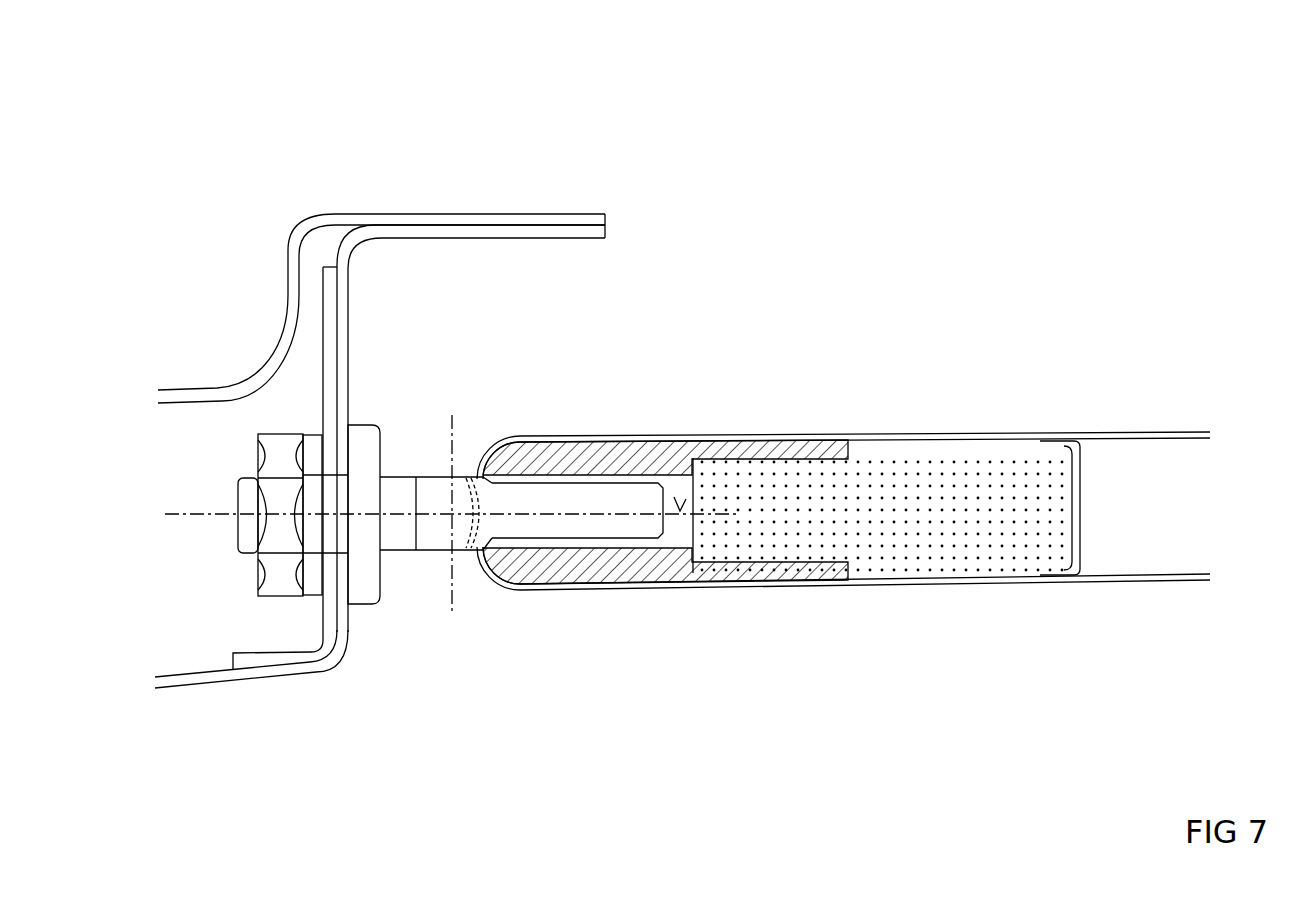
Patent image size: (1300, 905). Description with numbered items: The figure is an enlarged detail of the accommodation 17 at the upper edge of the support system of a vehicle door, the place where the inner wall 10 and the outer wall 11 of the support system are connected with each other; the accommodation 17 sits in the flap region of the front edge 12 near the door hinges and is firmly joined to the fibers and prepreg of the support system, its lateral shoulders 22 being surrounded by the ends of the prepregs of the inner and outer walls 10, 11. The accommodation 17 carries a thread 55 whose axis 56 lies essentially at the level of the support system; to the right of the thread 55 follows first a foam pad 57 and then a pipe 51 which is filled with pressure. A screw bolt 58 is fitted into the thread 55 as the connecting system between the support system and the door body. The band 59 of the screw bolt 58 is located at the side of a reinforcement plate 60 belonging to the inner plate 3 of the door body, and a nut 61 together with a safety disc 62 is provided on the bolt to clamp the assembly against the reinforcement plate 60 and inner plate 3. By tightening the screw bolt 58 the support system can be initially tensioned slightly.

The inner plate 3 is at (290, 275).
The reinforcement plate 60 is at (330, 337).
The front edge 12 is at (505, 412).
The accommodation 17 is at (573, 458).
The thread 55 is at (643, 478).
The axis 56 is at (681, 508).
The inner wall 10 is at (907, 437).
The pipe 51 is at (1123, 439).
The nut 61 is at (279, 578).
The safety disc 62 is at (313, 577).
The band 59 is at (363, 575).
The screw bolt 58 is at (438, 528).
The lateral shoulder 22 is at (479, 531).
The outer wall 11 is at (685, 582).
The foam pad 57 is at (882, 532).